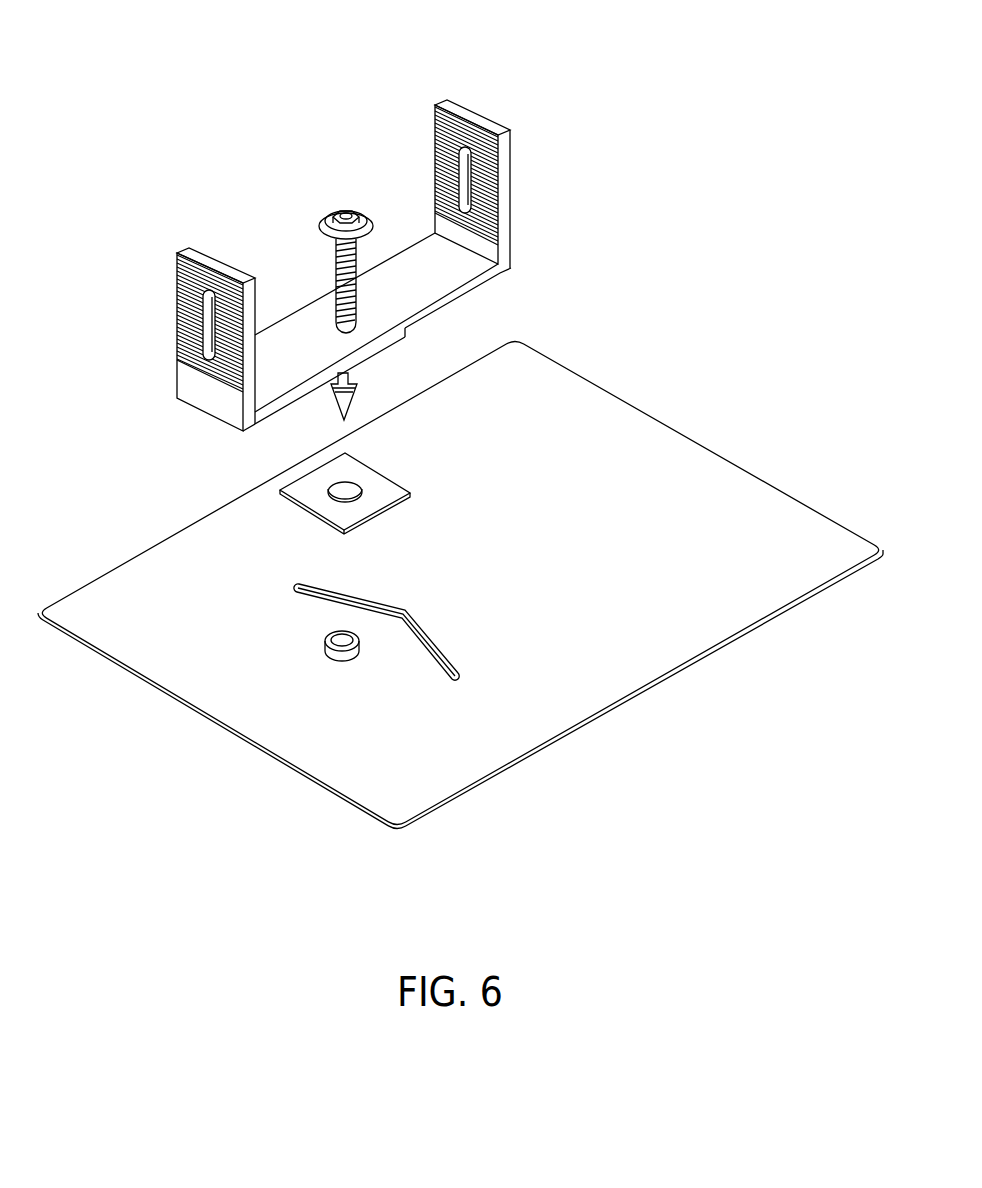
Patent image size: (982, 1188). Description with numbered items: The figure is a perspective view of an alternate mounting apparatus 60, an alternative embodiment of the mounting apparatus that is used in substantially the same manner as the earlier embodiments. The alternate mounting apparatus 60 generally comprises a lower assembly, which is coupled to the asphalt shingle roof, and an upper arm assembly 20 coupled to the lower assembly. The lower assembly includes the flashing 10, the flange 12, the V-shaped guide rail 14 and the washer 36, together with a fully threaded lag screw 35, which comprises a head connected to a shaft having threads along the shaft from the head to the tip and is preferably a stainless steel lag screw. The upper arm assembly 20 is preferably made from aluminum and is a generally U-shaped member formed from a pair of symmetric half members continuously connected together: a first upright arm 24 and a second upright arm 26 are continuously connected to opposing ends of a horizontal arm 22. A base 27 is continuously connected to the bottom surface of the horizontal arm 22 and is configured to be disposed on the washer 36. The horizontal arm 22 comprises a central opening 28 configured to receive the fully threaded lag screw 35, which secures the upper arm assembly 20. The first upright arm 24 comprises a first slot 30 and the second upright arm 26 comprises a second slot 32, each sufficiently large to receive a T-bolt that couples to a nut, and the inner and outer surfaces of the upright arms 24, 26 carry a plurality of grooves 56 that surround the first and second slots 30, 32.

The flashing 10 is at (797, 508).
The flange 12 is at (343, 657).
The V-shaped guide rail 14 is at (437, 642).
The upper arm assembly 20 is at (526, 298).
The horizontal arm 22 is at (436, 290).
The first upright arm 24 is at (196, 252).
The second upright arm 26 is at (440, 101).
The base 27 is at (404, 357).
The central opening 28 is at (349, 332).
The first slot 30 is at (210, 333).
The second slot 32 is at (462, 177).
The fully threaded lag screw 35 is at (330, 275).
The washer 36 is at (385, 495).
The grooves 56 is at (178, 295).
The alternate mounting apparatus 60 is at (110, 877).